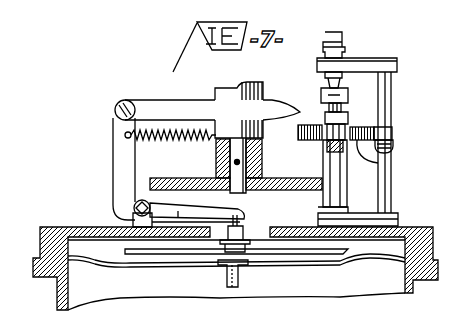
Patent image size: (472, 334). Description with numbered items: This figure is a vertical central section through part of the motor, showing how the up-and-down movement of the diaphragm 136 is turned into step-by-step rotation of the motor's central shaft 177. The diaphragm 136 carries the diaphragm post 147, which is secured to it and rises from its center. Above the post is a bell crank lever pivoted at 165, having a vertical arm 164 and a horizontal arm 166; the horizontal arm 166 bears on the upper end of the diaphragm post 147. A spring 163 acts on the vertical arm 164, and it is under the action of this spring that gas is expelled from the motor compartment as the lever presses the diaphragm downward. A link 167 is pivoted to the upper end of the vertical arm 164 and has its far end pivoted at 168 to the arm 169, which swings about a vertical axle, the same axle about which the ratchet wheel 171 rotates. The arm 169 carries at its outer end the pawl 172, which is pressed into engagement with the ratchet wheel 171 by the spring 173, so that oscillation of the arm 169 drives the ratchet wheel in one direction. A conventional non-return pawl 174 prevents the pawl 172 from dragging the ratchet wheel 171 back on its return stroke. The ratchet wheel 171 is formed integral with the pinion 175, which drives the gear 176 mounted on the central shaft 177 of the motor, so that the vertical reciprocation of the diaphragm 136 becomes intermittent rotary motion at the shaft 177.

The diaphragm 136 is at (338, 262).
The diaphragm post 147 is at (229, 287).
The spring 163 is at (165, 140).
The vertical arm 164 is at (115, 152).
The pivot 165 is at (134, 211).
The horizontal arm 166 is at (178, 212).
The link 167 is at (190, 100).
The pivot 168 is at (349, 102).
The arm 169 is at (349, 120).
The ratchet wheel 171 is at (392, 173).
The pawl 172 is at (392, 128).
The spring 173 is at (327, 138).
The non-return pawl 174 is at (395, 145).
The pinion 175 is at (348, 191).
The gear 176 is at (273, 188).
The central shaft 177 is at (233, 190).